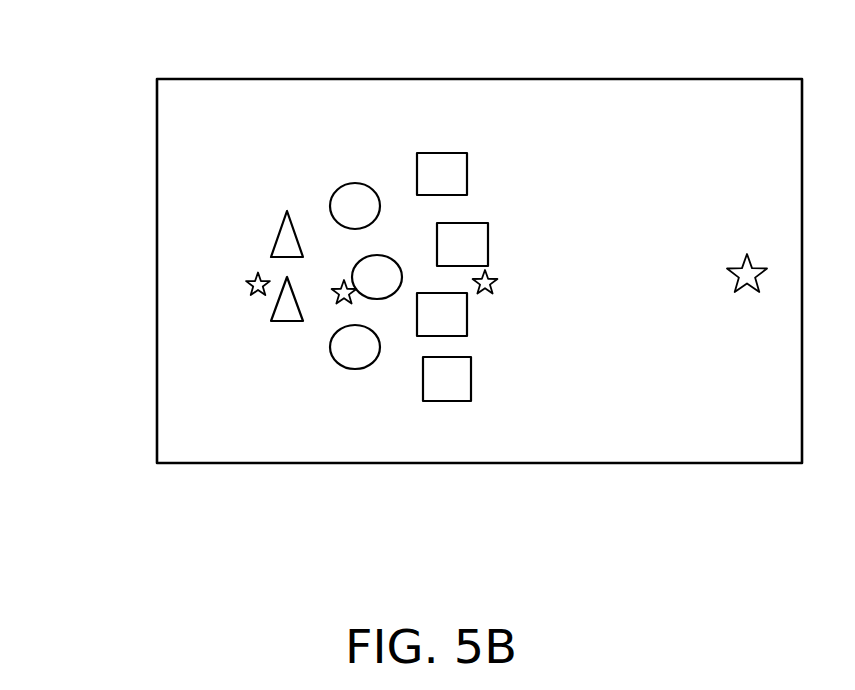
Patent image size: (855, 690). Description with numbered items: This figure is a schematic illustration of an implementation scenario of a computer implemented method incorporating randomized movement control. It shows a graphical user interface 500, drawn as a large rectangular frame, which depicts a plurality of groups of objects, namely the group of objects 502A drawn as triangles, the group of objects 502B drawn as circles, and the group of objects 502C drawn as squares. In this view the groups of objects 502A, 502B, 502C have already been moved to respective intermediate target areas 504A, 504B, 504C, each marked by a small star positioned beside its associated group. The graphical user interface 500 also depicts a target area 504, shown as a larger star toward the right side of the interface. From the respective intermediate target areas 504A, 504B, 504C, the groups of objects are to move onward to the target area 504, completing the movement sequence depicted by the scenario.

The graphical user interface 500 is at (180, 152).
The group of objects 502A is at (278, 228).
The group of objects 502B is at (340, 200).
The group of objects 502C is at (443, 163).
The intermediate target area 504A is at (250, 287).
The intermediate target area 504B is at (344, 296).
The intermediate target area 504C is at (485, 288).
The target area 504 is at (740, 280).